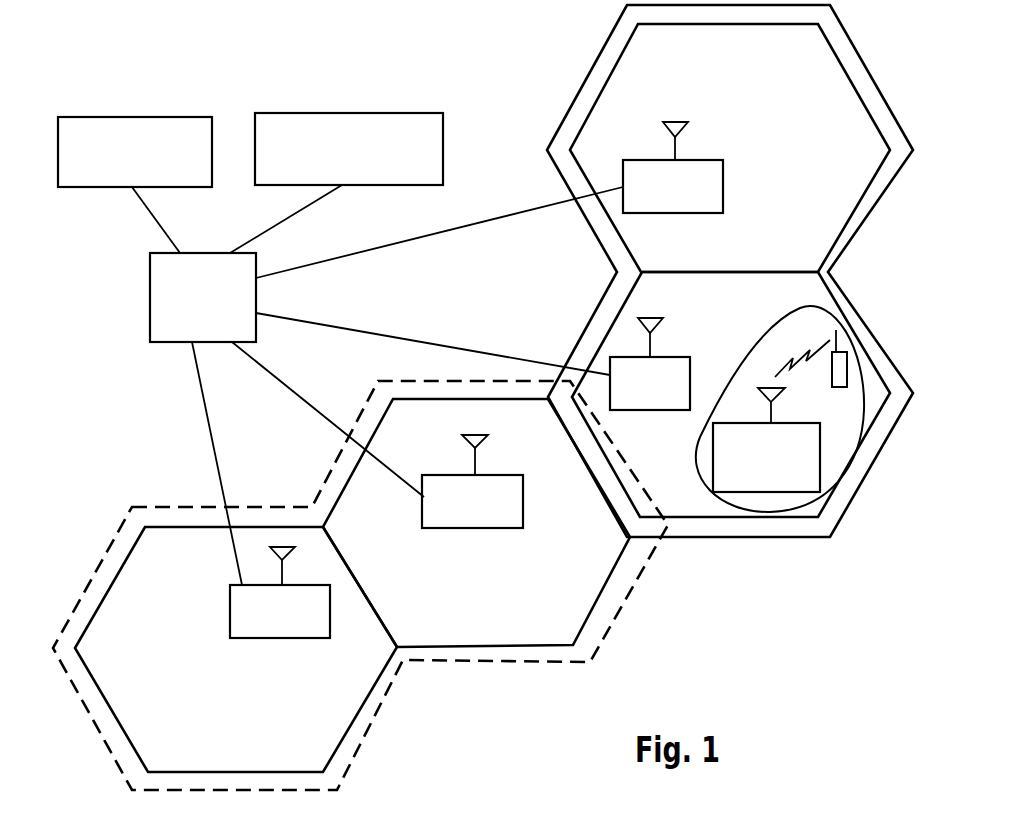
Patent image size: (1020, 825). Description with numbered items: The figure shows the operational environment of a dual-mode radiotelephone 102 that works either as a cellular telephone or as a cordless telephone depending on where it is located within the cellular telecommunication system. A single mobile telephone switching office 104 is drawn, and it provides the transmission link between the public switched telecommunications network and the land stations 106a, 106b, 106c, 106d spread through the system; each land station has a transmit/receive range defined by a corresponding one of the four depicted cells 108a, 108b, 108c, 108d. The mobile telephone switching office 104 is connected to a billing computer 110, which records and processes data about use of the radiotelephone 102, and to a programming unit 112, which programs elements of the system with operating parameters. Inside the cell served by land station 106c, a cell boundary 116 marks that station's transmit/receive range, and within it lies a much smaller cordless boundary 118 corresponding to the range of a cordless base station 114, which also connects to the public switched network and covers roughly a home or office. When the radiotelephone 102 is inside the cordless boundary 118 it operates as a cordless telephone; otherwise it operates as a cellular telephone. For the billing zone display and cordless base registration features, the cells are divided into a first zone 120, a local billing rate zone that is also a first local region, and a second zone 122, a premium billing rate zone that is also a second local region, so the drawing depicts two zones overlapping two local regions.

The radiotelephone 102 is at (848, 360).
The mobile telephone switching office 104 is at (150, 299).
The land station 106a is at (230, 620).
The land station 106b is at (447, 475).
The land station 106c is at (615, 357).
The land station 106d is at (723, 173).
The cell 108a is at (263, 765).
The cell 108b is at (540, 610).
The cell 108c is at (756, 305).
The cell 108d is at (791, 65).
The billing computer 110 is at (70, 117).
The programming unit 112 is at (315, 112).
The cordless base station 114 is at (820, 467).
The cell boundary 116 is at (840, 280).
The cordless boundary 118 is at (748, 512).
The first zone 120 is at (610, 28).
The second zone 122 is at (138, 507).